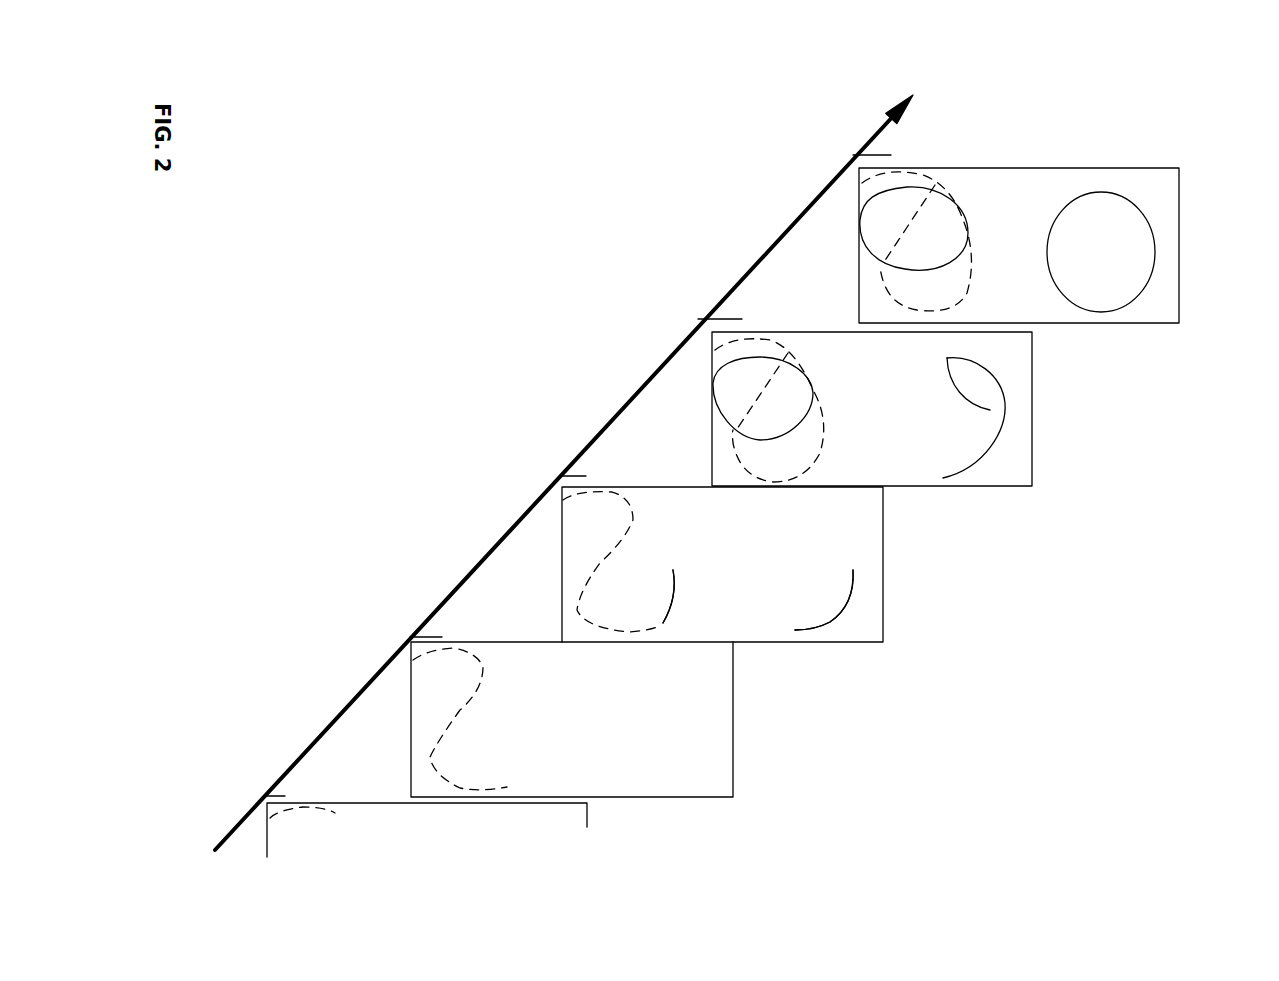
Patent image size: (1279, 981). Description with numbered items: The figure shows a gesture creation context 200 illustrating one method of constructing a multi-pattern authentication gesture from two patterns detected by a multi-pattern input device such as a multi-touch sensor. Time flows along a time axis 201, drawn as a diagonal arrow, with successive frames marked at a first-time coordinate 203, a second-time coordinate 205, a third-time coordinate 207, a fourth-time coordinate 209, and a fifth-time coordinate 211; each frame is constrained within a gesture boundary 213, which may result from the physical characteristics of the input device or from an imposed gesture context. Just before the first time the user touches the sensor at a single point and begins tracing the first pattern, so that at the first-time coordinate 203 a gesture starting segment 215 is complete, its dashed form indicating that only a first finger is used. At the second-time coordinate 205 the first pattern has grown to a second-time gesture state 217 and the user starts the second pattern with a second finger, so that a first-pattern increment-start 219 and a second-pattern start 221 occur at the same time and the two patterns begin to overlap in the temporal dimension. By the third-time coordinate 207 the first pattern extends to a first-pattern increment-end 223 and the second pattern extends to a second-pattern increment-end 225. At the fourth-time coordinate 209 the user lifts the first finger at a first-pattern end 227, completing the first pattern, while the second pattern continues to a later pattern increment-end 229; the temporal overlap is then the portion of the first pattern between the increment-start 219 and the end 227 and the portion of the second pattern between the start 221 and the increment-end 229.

The gesture creation context 200 is at (1052, 85).
The time axis 201 is at (905, 95).
The T1 coordinate 203 is at (262, 797).
The T2 coordinate 205 is at (410, 637).
The T3 coordinate 207 is at (560, 476).
The T4 coordinate 209 is at (700, 319).
The T5 coordinate 211 is at (853, 155).
The gesture boundary 213 is at (1180, 311).
The gesture starting segment 215 is at (330, 805).
The T2 gesture state 217 is at (497, 648).
The T2-to-T3 Pattern 1 increment-start 219 is at (663, 623).
The T2-to-T3 Pattern 2 start 221 is at (790, 630).
The T2-to-T3 Pattern 1 increment-end 223 is at (673, 570).
The T2-to-T3 Pattern 2 increment-end 225 is at (853, 569).
The T4-Pattern 1-end 227 is at (813, 388).
The T3-to-T4 Pattern increment-end 229 is at (990, 410).